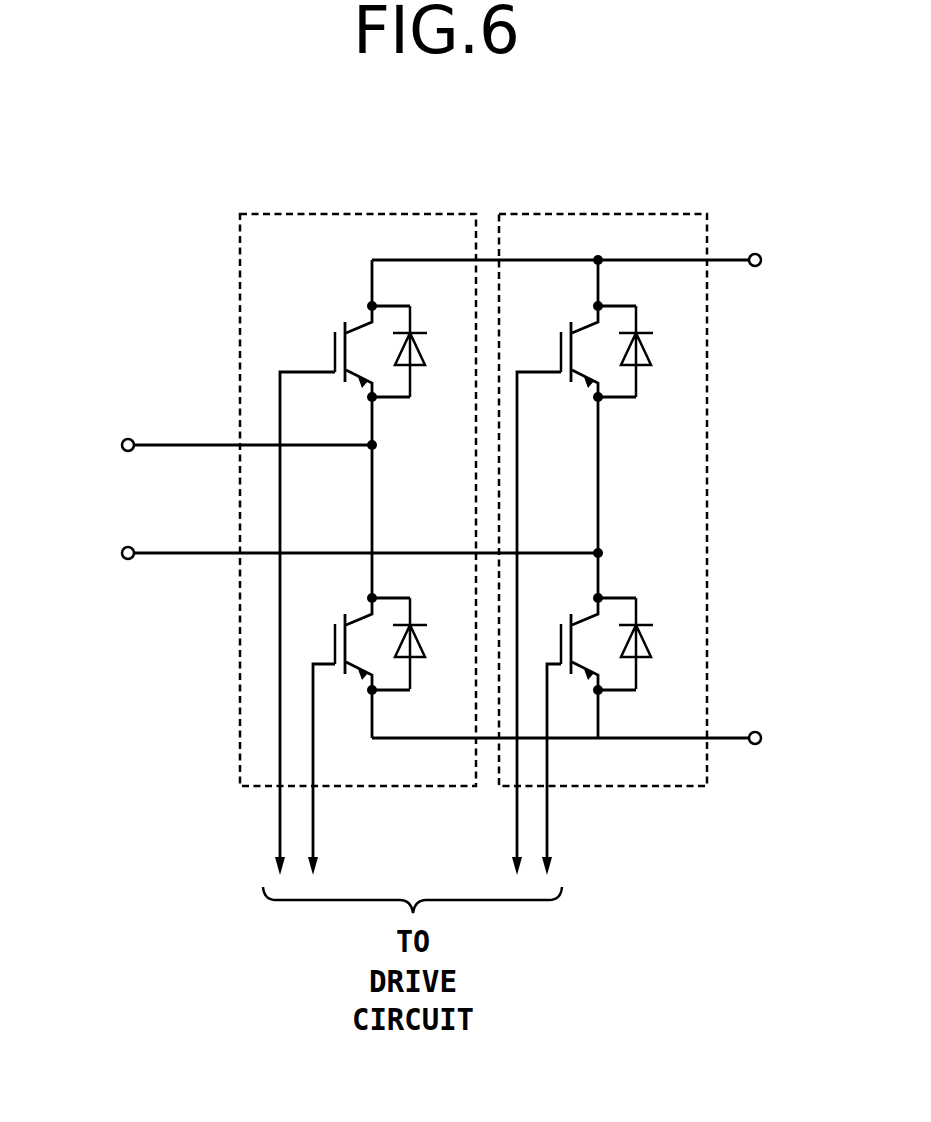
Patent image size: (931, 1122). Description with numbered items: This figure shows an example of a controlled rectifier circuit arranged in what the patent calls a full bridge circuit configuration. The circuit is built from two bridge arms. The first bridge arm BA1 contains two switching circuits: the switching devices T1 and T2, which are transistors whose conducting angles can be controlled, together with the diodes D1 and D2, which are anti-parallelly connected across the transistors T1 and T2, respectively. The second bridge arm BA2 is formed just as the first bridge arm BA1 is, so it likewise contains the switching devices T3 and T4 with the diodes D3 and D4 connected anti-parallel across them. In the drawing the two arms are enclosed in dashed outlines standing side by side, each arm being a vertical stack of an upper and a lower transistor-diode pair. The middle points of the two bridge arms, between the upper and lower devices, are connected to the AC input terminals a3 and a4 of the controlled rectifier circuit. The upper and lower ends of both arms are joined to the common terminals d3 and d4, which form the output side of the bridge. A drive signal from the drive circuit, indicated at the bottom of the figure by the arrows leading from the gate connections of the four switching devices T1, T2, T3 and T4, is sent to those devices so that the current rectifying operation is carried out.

The bridge arm BA1 is at (349, 212).
The second bridge arm BA2 is at (606, 212).
The switching device T1 is at (323, 574).
The switching device T2 is at (332, 721).
The switching device T3 is at (555, 574).
The switching device T4 is at (563, 721).
The diode D1 is at (426, 335).
The diode D2 is at (428, 628).
The diode D3 is at (656, 335).
The diode D4 is at (656, 628).
The AC input terminal a3 is at (220, 447).
The AC input terminal a4 is at (333, 555).
The DC input terminal d3 is at (779, 260).
The DC input terminal d4 is at (779, 738).